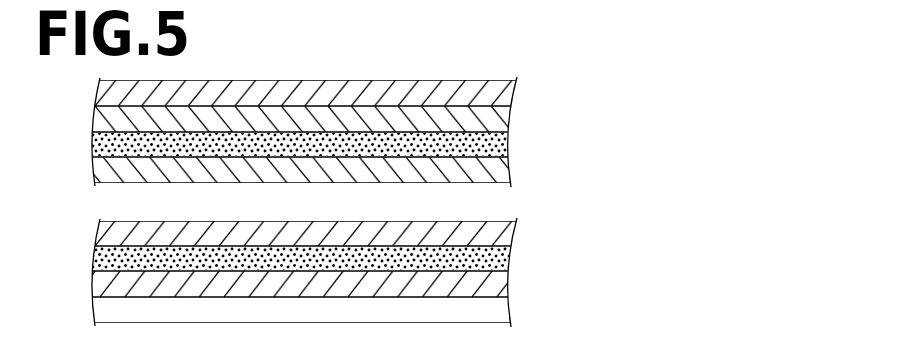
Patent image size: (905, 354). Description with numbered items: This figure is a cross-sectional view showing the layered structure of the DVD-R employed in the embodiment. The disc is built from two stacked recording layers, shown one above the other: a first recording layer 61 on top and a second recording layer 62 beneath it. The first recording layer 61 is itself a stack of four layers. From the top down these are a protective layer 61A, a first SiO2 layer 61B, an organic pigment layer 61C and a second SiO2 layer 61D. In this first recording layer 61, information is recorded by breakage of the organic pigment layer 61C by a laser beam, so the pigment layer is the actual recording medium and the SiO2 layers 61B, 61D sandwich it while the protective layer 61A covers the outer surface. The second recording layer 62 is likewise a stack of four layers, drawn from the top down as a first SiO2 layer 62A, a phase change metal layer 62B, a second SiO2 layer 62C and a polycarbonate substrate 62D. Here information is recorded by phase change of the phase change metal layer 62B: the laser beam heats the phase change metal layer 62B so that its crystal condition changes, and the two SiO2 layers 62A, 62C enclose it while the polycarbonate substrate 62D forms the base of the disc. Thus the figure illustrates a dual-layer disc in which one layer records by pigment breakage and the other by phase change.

The first recording layer 61 is at (73, 80).
The protective layer 61A is at (503, 89).
The first SiO2 layer 61B is at (502, 112).
The organic pigment layer 61C is at (503, 137).
The second SiO2 layer 61D is at (504, 160).
The second recording layer 62 is at (73, 221).
The first SiO2 layer 62A is at (504, 230).
The phase change metal layer 62B is at (504, 252).
The second SiO2 layer 62C is at (504, 278).
The polycarbonate substrate 62D is at (504, 302).